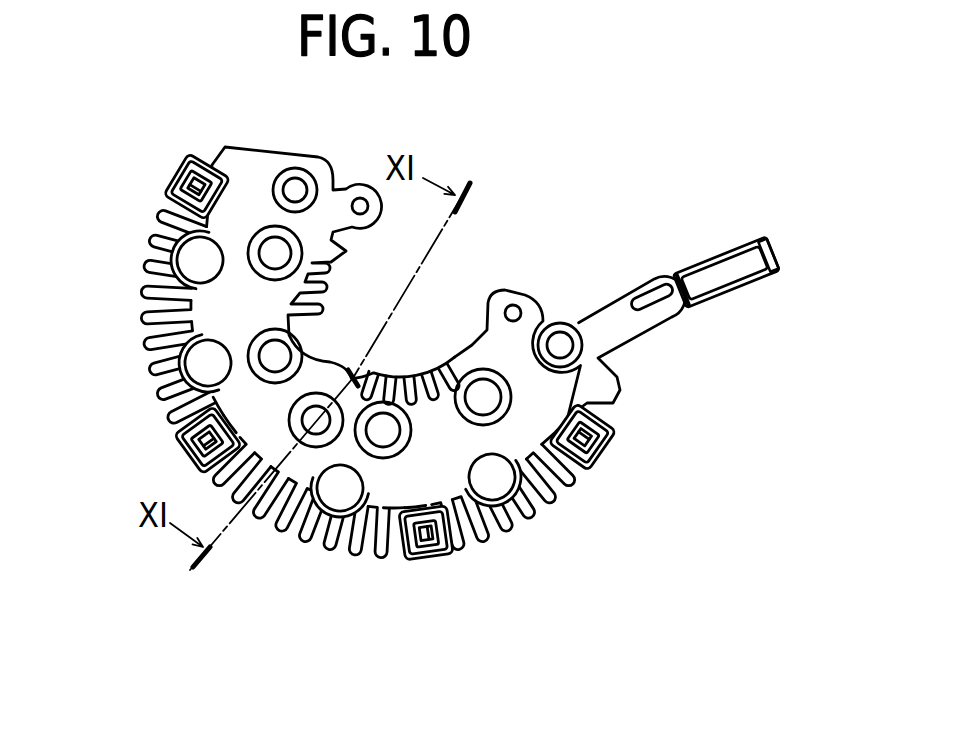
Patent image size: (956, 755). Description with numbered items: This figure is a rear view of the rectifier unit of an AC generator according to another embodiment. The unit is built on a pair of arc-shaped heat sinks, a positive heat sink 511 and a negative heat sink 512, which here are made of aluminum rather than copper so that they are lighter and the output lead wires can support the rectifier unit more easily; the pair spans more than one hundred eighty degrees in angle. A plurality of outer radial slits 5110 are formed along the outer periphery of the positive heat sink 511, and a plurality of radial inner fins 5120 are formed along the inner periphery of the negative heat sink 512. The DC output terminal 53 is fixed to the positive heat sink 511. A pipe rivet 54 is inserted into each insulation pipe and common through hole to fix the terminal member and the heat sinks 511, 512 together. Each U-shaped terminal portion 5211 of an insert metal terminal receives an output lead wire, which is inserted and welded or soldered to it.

The positive heat sink 511 is at (480, 547).
The outer radial slits 5110 is at (378, 560).
The negative heat sink 512 is at (575, 378).
The radial inner fins 5120 is at (410, 385).
The U-shaped terminal portion 5211 is at (170, 180).
The DC output terminal 53 is at (748, 262).
The pipe rivet 54 is at (565, 330).